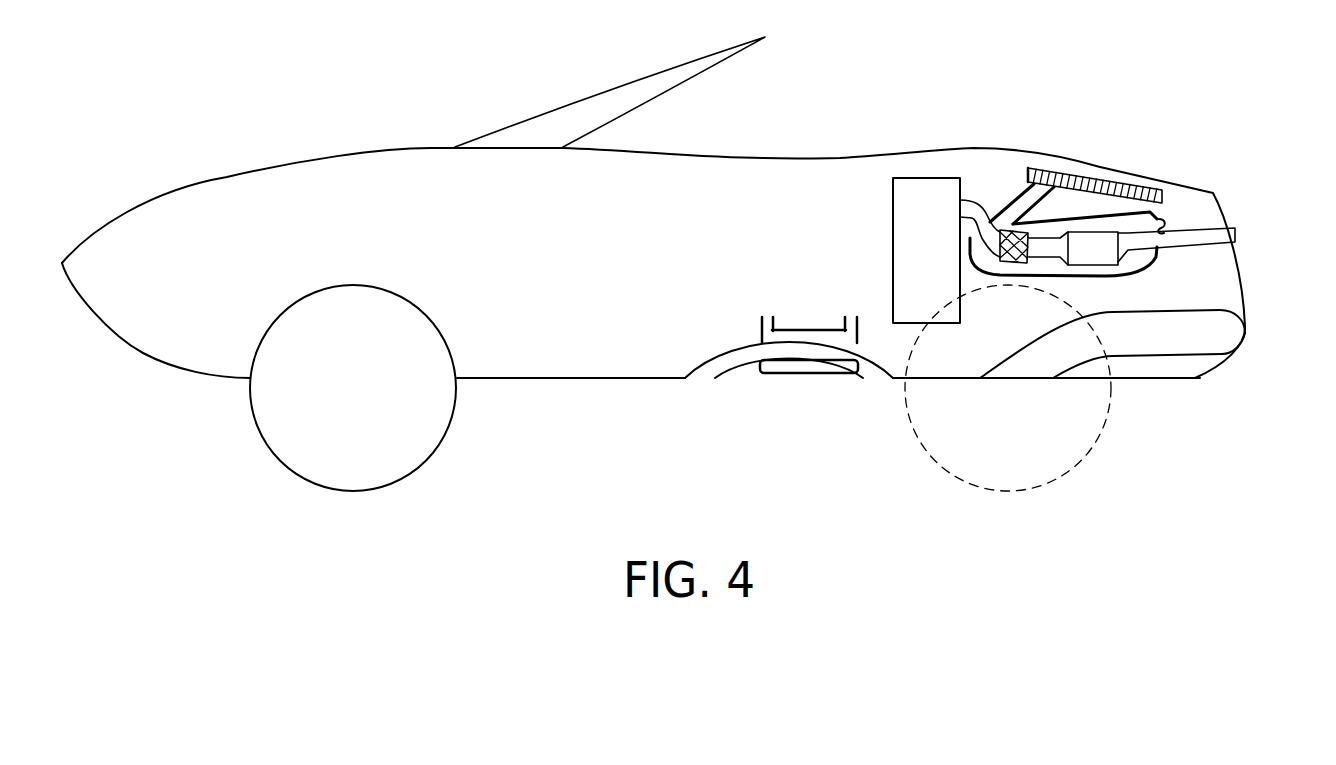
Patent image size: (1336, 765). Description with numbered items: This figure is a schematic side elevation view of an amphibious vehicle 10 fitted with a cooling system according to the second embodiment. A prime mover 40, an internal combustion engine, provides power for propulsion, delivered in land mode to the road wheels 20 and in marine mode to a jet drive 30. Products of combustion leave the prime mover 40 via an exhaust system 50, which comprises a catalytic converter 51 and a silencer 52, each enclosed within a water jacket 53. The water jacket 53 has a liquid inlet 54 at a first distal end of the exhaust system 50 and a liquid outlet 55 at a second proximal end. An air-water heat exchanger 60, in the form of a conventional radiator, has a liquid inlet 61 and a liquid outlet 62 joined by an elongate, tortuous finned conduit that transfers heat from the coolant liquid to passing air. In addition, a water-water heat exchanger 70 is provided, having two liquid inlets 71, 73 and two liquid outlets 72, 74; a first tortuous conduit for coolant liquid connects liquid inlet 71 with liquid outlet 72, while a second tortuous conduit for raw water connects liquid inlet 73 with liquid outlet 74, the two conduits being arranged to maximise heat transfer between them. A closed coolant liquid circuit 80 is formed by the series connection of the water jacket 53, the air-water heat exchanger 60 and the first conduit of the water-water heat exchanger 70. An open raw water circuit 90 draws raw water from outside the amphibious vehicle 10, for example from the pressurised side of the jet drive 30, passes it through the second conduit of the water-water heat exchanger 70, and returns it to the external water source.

The amphibious vehicle 10 is at (1173, 70).
The road wheels 20 is at (363, 403).
The jet drive 30 is at (1247, 333).
The prime mover 40 is at (938, 263).
The exhaust system 50 is at (1237, 235).
The catalytic converter 51 is at (1008, 263).
The silencer 52 is at (1110, 253).
The water jacket 53 is at (1060, 267).
The liquid inlet 54 is at (1167, 220).
The liquid outlet 55 is at (1013, 200).
The air-water heat exchanger 60 is at (1080, 178).
The liquid inlet 61 is at (1153, 208).
The liquid outlet 62 is at (1033, 168).
The water-water heat exchanger 70 is at (757, 370).
The liquid inlet 71 is at (855, 313).
The liquid outlet 72 is at (765, 313).
The liquid inlet 73 is at (693, 380).
The liquid outlet 74 is at (882, 378).
The closed coolant liquid circuit 80 is at (1256, 198).
The open raw water circuit 90 is at (783, 413).